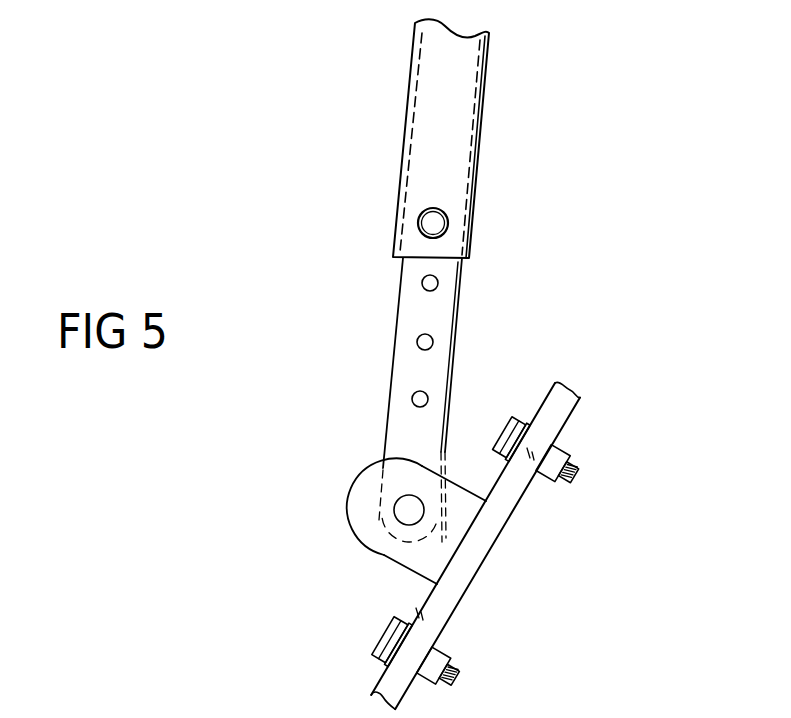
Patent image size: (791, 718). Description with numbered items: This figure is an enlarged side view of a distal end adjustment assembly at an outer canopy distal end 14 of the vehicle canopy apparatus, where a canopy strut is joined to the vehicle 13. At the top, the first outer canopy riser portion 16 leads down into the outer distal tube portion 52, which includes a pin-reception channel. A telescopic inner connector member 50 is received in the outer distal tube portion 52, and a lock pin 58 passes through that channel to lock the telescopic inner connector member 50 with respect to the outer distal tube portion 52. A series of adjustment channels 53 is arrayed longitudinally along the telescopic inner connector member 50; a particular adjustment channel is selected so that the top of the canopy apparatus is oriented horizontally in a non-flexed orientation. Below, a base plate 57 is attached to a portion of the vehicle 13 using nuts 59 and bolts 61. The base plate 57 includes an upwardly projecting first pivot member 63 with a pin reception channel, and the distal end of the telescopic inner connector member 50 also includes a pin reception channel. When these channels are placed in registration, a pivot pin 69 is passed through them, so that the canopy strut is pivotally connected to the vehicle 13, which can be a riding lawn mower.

The vehicle 13 is at (588, 385).
The outer canopy distal end 14 is at (366, 403).
The first outer canopy riser portion 16 is at (445, 99).
The telescopic inner connector member 50 is at (400, 350).
The outer distal tube portion 52 is at (450, 176).
The adjustment channels 53 is at (427, 292).
The base plate 57 is at (424, 584).
The lock pin 58 is at (433, 220).
The nuts 59 is at (556, 467).
The bolts 61 is at (567, 487).
The first pivot member 63 is at (410, 553).
The pivot pin 69 is at (405, 508).